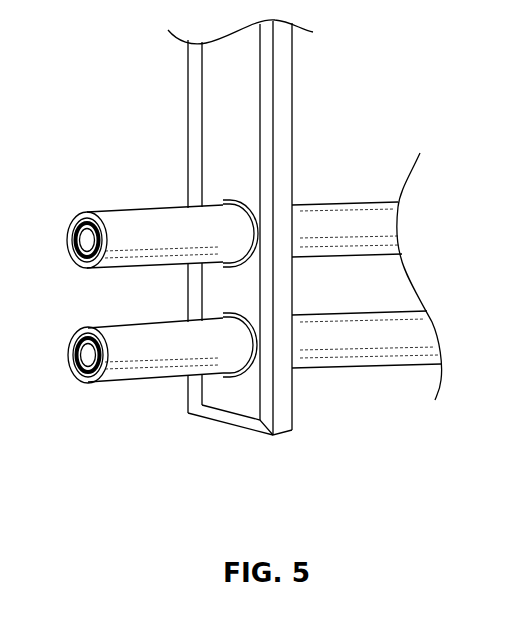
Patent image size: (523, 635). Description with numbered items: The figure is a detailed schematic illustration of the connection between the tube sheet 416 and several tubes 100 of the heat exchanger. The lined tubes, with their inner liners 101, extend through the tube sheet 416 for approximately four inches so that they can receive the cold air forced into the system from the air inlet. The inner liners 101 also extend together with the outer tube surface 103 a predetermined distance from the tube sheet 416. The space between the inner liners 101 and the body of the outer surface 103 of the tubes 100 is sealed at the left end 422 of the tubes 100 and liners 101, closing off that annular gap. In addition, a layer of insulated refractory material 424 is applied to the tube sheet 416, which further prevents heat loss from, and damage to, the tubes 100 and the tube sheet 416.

The tube 100 is at (345, 196).
The inner liner 101 is at (73, 231).
The outer tube surface 103 is at (120, 212).
The tube sheet 416 is at (277, 437).
The left end 422 is at (78, 381).
The insulated refractory material 424 is at (238, 399).